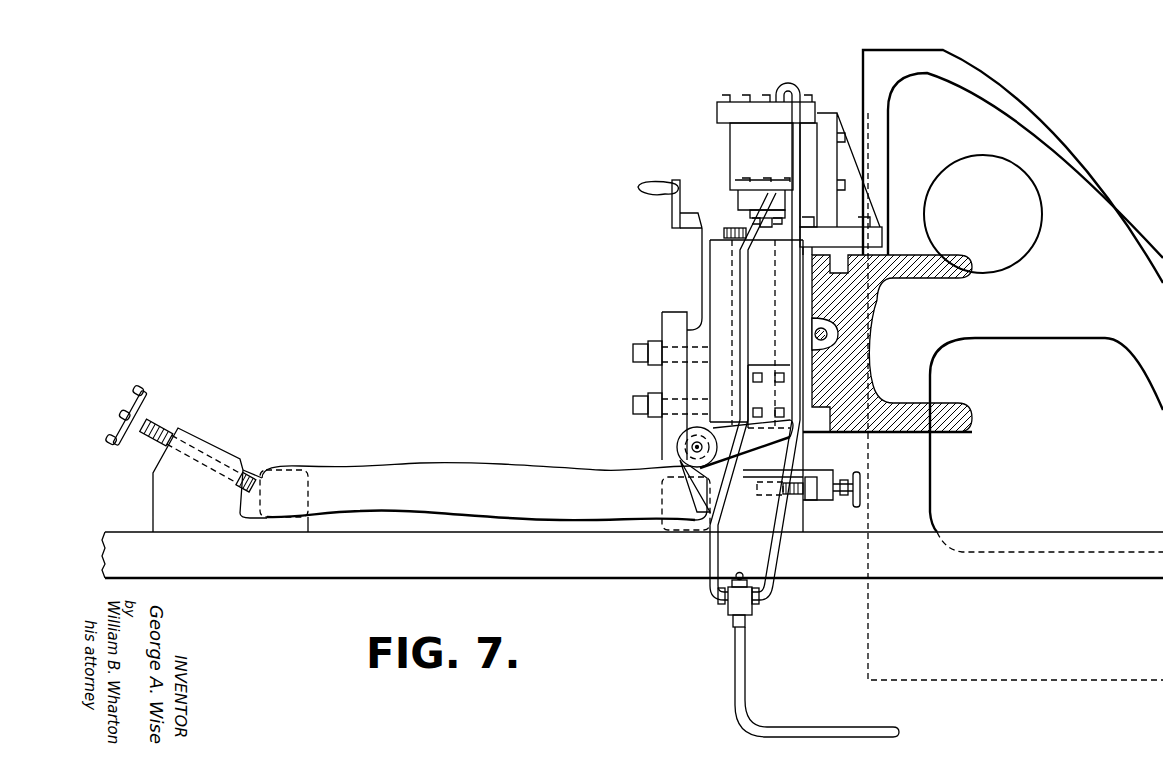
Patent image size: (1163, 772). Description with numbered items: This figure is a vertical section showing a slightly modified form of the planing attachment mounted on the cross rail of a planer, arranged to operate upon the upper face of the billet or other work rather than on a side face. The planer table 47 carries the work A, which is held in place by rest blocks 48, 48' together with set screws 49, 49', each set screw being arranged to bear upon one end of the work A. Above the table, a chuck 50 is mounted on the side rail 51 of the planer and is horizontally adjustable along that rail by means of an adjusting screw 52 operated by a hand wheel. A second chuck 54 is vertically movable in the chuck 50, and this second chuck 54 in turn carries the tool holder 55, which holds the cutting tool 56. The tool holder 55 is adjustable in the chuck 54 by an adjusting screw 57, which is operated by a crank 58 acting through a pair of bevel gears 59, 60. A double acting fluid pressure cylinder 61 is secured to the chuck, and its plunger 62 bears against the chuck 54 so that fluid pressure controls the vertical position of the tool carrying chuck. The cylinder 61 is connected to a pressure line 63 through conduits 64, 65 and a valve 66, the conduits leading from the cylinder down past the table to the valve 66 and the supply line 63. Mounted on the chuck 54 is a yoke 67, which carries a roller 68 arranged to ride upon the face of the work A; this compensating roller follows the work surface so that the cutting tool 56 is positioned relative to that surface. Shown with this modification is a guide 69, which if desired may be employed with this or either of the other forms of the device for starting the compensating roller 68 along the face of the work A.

The planer table 47 is at (337, 576).
The rest block 48 is at (210, 518).
The rest block 48' is at (680, 536).
The set screw 49 is at (186, 449).
The set screw 49' is at (808, 499).
The chuck 50 is at (818, 427).
The side rail 51 is at (948, 434).
The adjusting screw 52 is at (828, 334).
The second chuck 54 is at (752, 292).
The tool holder 55 is at (710, 302).
The cutting tool 56 is at (660, 380).
The adjusting screw 57 is at (732, 247).
The crank 58 is at (640, 190).
The bevel gear 59 is at (738, 228).
The bevel gear 60 is at (733, 227).
The double acting fluid pressure cylinder 61 is at (745, 137).
The plunger 62 is at (770, 224).
The pressure line 63 is at (746, 660).
The conduit 64 is at (772, 573).
The conduit 65 is at (706, 592).
The valve 66 is at (748, 612).
The yoke 67 is at (791, 445).
The roller 68 is at (677, 447).
The guide 69 is at (762, 474).
The work A is at (408, 468).